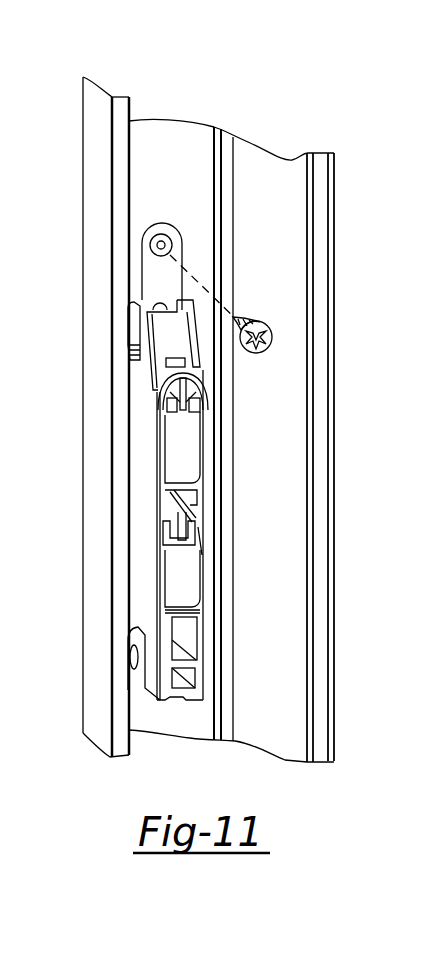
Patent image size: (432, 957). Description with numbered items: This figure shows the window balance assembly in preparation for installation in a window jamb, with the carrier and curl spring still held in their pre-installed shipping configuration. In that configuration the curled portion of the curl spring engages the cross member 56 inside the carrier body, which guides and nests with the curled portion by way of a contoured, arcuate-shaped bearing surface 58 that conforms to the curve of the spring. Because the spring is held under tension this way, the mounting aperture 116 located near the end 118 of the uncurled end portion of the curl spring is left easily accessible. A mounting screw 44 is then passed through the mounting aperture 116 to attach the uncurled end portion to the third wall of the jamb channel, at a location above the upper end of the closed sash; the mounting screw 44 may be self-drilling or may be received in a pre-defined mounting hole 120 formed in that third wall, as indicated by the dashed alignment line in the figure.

The mounting screw 44 is at (271, 330).
The end 118 is at (166, 224).
The mounting hole 120 is at (152, 250).
The mounting aperture 116 is at (163, 253).
The cross member 56 is at (200, 528).
The arcuate-shaped bearing surface 58 is at (164, 526).